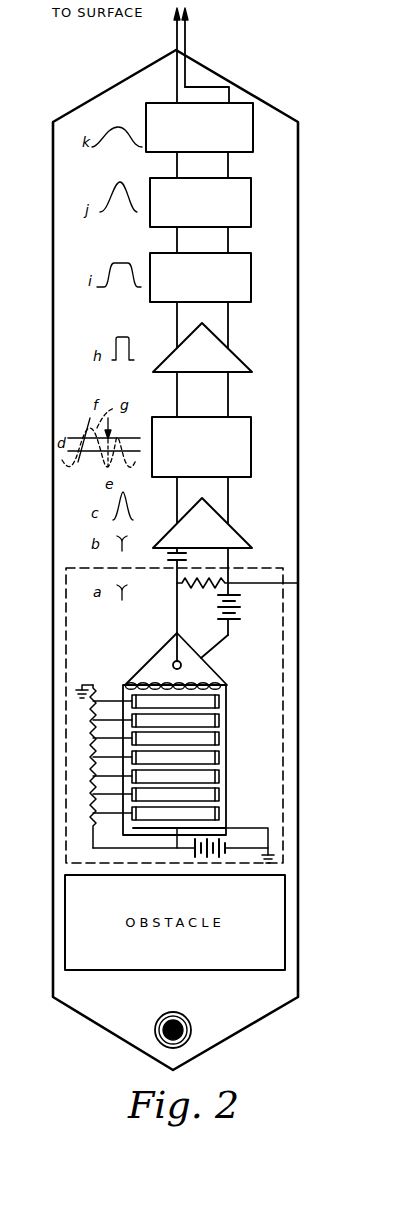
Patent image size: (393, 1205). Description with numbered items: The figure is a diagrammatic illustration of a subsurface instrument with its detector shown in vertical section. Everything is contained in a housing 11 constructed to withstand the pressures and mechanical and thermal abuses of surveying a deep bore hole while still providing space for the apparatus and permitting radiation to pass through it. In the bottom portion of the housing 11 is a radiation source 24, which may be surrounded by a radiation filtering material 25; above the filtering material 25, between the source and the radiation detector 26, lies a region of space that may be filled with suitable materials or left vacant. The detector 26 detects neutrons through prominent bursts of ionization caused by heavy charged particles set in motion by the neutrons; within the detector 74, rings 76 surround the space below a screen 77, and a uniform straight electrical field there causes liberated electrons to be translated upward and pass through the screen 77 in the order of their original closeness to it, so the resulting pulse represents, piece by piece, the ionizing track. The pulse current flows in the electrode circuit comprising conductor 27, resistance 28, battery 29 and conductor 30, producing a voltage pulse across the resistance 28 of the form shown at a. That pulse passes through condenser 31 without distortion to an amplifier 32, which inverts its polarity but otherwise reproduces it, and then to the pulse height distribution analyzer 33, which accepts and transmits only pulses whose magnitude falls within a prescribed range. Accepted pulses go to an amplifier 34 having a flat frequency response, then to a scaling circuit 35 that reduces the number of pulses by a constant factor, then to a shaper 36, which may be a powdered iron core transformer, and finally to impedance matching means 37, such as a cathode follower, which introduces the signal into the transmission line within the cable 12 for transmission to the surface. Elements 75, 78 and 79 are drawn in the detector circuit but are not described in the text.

The housing 11 is at (302, 704).
The cable 12 is at (187, 34).
The radiation source 24 is at (191, 1028).
The radiation filtering material 25 is at (252, 998).
The radiation detector 26 is at (283, 648).
The conductor 27 is at (174, 665).
The resistance 28 is at (177, 600).
The battery 29 is at (241, 603).
The conductor 30 is at (213, 652).
The condenser 31 is at (172, 557).
The amplifier 32 is at (252, 546).
The pulse height distribution analyzer 33 is at (251, 466).
The amplifier 34 is at (252, 370).
The scaling circuit 35 is at (251, 295).
The shaper 36 is at (251, 221).
The impedance matching means 37 is at (253, 147).
The detector 74 is at (226, 738).
The bottom lead 75 is at (140, 829).
The rings 76 is at (219, 778).
The screen 77 is at (226, 683).
The battery 78 is at (226, 846).
The voltage divider resistor 79 is at (93, 764).